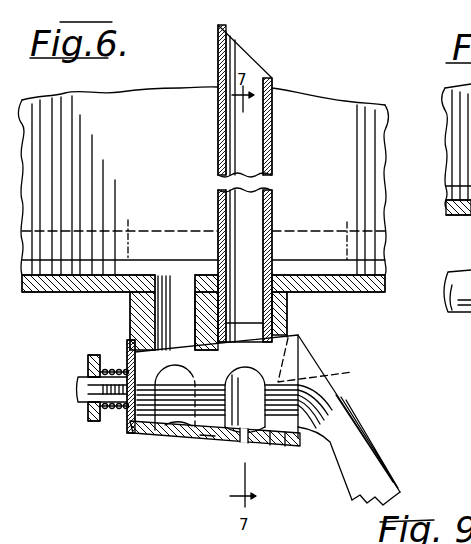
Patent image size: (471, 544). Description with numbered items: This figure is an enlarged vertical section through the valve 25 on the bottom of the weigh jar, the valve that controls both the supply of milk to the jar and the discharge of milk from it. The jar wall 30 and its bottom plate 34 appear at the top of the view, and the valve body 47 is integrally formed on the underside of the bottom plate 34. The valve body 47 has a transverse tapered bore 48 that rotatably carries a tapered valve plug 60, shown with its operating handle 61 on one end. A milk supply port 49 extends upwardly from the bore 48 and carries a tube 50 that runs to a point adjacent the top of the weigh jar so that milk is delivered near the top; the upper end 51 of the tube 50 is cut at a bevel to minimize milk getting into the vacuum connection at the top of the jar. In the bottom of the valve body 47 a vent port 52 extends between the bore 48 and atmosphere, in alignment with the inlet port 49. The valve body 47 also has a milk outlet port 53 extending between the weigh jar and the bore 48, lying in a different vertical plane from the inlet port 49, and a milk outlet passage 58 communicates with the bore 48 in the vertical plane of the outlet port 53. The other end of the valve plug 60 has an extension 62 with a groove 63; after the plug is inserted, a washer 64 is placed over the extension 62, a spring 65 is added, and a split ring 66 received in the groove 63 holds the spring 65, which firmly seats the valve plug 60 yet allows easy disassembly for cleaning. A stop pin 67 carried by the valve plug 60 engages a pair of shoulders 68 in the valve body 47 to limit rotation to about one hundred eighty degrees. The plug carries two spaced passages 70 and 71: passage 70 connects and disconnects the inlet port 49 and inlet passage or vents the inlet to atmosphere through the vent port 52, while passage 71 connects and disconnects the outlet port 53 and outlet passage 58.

The valve 25 is at (155, 442).
The container wall 30 is at (372, 188).
The bottom plate 34 is at (360, 288).
The valve body 47 is at (142, 310).
The tapered bore 48 is at (203, 437).
The milk supply port 49 is at (253, 332).
The tube 50 is at (272, 215).
The tube upper end 51 is at (253, 54).
The vent port 52 is at (243, 447).
The milk outlet port 53 is at (180, 284).
The milk outlet passage 58 is at (192, 373).
The valve plug 60 is at (273, 352).
The operating handle 61 is at (378, 462).
The extension 62 is at (118, 410).
The groove 63 is at (88, 360).
The washer 64 is at (127, 432).
The spring 65 is at (117, 366).
The split ring 66 is at (88, 413).
The stop pin 67 is at (277, 441).
The shoulders 68 is at (343, 374).
The plug passage 70 is at (255, 414).
The plug passage 71 is at (178, 438).